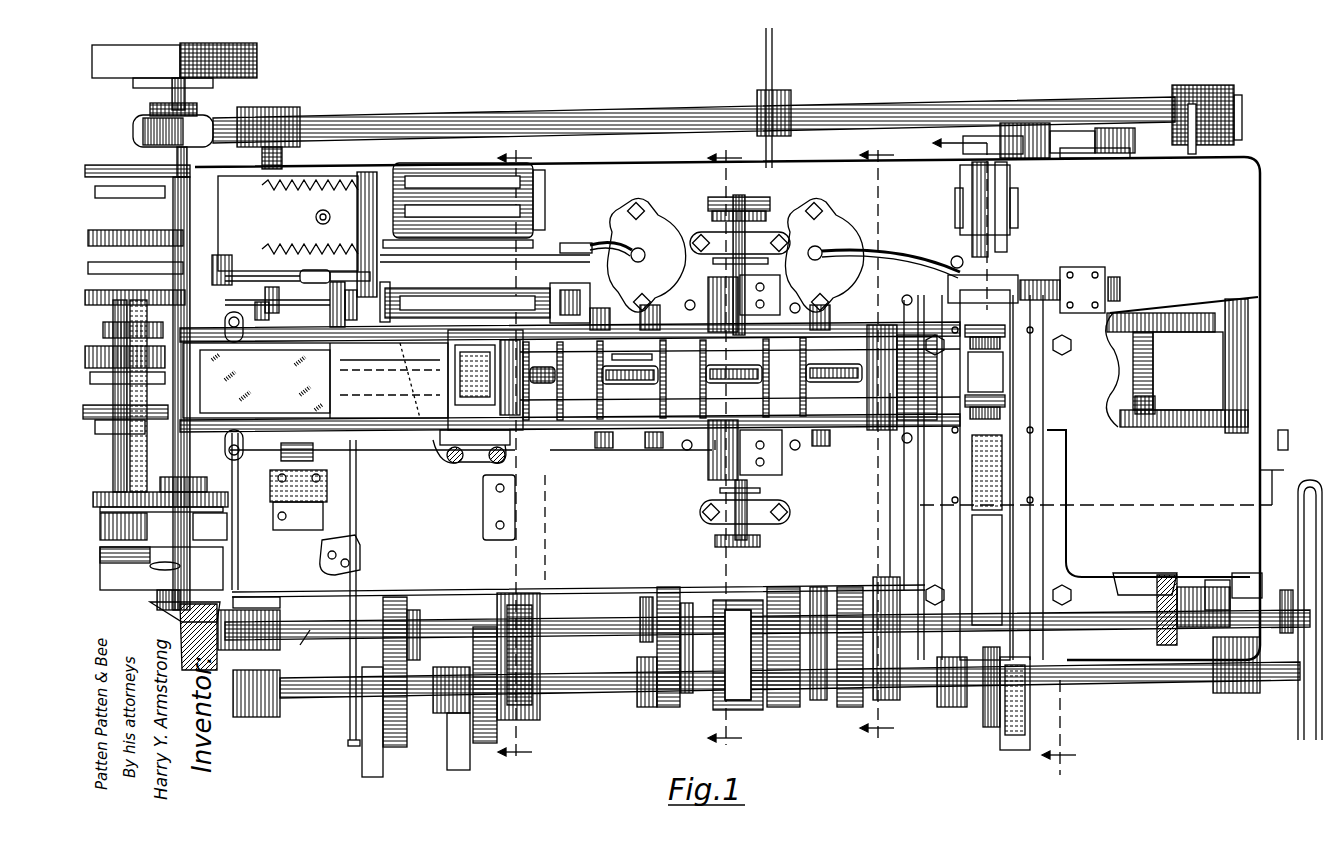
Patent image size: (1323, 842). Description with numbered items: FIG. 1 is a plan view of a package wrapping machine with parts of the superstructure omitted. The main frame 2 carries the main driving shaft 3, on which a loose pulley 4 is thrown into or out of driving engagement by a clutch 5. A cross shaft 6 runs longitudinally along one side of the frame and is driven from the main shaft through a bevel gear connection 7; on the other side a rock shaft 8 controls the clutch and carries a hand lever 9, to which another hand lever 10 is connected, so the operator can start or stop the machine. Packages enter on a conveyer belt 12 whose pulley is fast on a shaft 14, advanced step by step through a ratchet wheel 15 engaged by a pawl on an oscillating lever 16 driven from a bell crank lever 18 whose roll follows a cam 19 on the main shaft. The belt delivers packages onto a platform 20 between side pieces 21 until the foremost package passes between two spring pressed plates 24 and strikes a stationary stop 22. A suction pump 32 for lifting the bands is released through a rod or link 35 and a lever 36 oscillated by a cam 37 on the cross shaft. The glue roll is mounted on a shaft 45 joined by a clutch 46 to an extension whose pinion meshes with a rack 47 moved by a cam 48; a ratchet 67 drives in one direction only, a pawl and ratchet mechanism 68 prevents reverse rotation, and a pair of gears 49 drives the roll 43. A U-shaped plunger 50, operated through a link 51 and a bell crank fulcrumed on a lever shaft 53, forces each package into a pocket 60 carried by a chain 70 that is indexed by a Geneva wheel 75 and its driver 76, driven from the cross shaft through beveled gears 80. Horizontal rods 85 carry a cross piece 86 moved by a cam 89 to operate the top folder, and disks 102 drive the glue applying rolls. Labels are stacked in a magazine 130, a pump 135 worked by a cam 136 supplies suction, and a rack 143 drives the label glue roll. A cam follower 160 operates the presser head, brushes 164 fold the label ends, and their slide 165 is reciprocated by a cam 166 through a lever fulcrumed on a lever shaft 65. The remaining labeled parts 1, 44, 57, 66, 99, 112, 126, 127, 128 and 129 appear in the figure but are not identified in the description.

The bevel gear drive 1 is at (192, 625).
The main frame 2 is at (125, 453).
The main driving shaft 3 is at (176, 156).
The loose pulley 4 is at (257, 62).
The clutch 5 is at (152, 108).
The cross shaft 6 is at (533, 442).
The bevel gear connection 7 is at (878, 439).
The rock shaft 8 is at (622, 110).
The hand lever 9 is at (765, 51).
The hand lever 10 is at (770, 588).
The conveyer belt 12 is at (265, 381).
The shaft 14 is at (281, 452).
The ratchet wheel 15 is at (270, 506).
The oscillating lever 16 is at (320, 535).
The bell crank lever 18 is at (163, 561).
The cam 19 is at (103, 510).
The platform 20 is at (315, 381).
The side pieces 21 is at (412, 360).
The stationary stop 22 is at (520, 352).
The vertical spring pressed plates 24 is at (450, 405).
The pump 32 is at (660, 228).
The rod or link 35 is at (645, 605).
The lever 36 is at (655, 655).
The cam 37 is at (677, 700).
The roll 43 is at (512, 290).
The tray bottom 44 is at (390, 371).
The shaft 45 is at (256, 311).
The clutch 46 is at (345, 280).
The rack 47 is at (356, 475).
The cam 48 is at (400, 748).
The pair of gears 49 is at (585, 304).
The U-shaped plunger 50 is at (462, 400).
The link 51 is at (108, 351).
The lever shaft 53 is at (110, 327).
The roller bracket 57 is at (465, 470).
The pocket 60 is at (1058, 373).
The lever shaft 65 is at (315, 702).
The gear 66 is at (520, 722).
The ratchet 67 is at (330, 292).
The pawl and ratchet mechanism 68 is at (265, 293).
The chain 70 is at (632, 351).
The Geneva wheel 75 is at (977, 135).
The driver 76 is at (1130, 152).
The beveled gears 80 is at (1140, 600).
The horizontal rods 85 is at (213, 385).
The cross piece 86 is at (172, 352).
The cam 89 is at (108, 417).
The post 99 is at (722, 272).
The disk 102 is at (748, 492).
The sprocket 112 is at (902, 377).
The frame member 126 is at (1198, 352).
The housing 127 is at (1178, 371).
The housing block 128 is at (1188, 406).
The handle loop 129 is at (1275, 432).
The magazine 130 is at (962, 186).
The pump 135 is at (830, 230).
The cam 136 is at (790, 705).
The rack 143 is at (1040, 344).
The cam follower 160 is at (918, 566).
The brushes 164 is at (1005, 328).
The slide 165 is at (988, 530).
The cam 166 is at (962, 708).